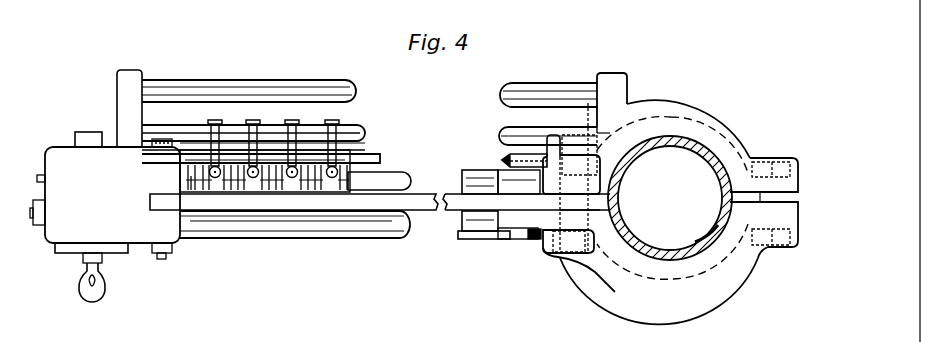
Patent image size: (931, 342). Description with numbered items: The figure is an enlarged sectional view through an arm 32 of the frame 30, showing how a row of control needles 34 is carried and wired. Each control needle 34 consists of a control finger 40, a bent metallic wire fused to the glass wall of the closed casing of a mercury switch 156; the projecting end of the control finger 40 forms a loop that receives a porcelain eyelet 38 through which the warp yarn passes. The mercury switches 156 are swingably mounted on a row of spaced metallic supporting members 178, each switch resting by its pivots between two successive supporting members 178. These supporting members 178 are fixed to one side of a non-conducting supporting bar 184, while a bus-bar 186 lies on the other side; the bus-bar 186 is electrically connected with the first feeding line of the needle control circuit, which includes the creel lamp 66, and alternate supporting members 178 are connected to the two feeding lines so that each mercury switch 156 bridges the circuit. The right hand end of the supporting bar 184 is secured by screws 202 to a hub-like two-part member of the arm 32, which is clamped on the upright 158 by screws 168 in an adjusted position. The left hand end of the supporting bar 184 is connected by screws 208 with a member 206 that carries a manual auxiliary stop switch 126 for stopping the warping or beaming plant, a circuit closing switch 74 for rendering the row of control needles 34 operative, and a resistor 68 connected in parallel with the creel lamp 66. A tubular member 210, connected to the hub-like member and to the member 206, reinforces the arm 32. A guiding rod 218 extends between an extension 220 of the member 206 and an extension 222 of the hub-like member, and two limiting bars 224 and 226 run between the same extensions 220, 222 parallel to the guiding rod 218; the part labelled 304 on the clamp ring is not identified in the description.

The frame 30 is at (679, 186).
The arm 32 is at (387, 248).
The control needle 34 is at (314, 152).
The eyelet 38 is at (290, 120).
The control finger 40 is at (202, 147).
The creel lamp 66 is at (104, 290).
The resistor 68 is at (92, 132).
The circuit closing switch 74 is at (38, 175).
The manual auxiliary stop switch 126 is at (37, 226).
The mercury switch 156 is at (252, 193).
The upright 158 is at (705, 142).
The screws 168 is at (556, 135).
The supporting members 178 is at (232, 192).
The supporting bar 184 is at (478, 200).
The bus-bar 186 is at (356, 194).
The screws 202 is at (533, 240).
The member 206 is at (62, 160).
The screws 208 is at (162, 139).
The tubular member 210 is at (410, 238).
The guiding rod 218 is at (222, 86).
The extension 220 is at (130, 78).
The extension 222 is at (616, 80).
The limiting bar 224 is at (505, 136).
The limiting bar 226 is at (505, 160).
The clamp ring flange 304 is at (694, 94).